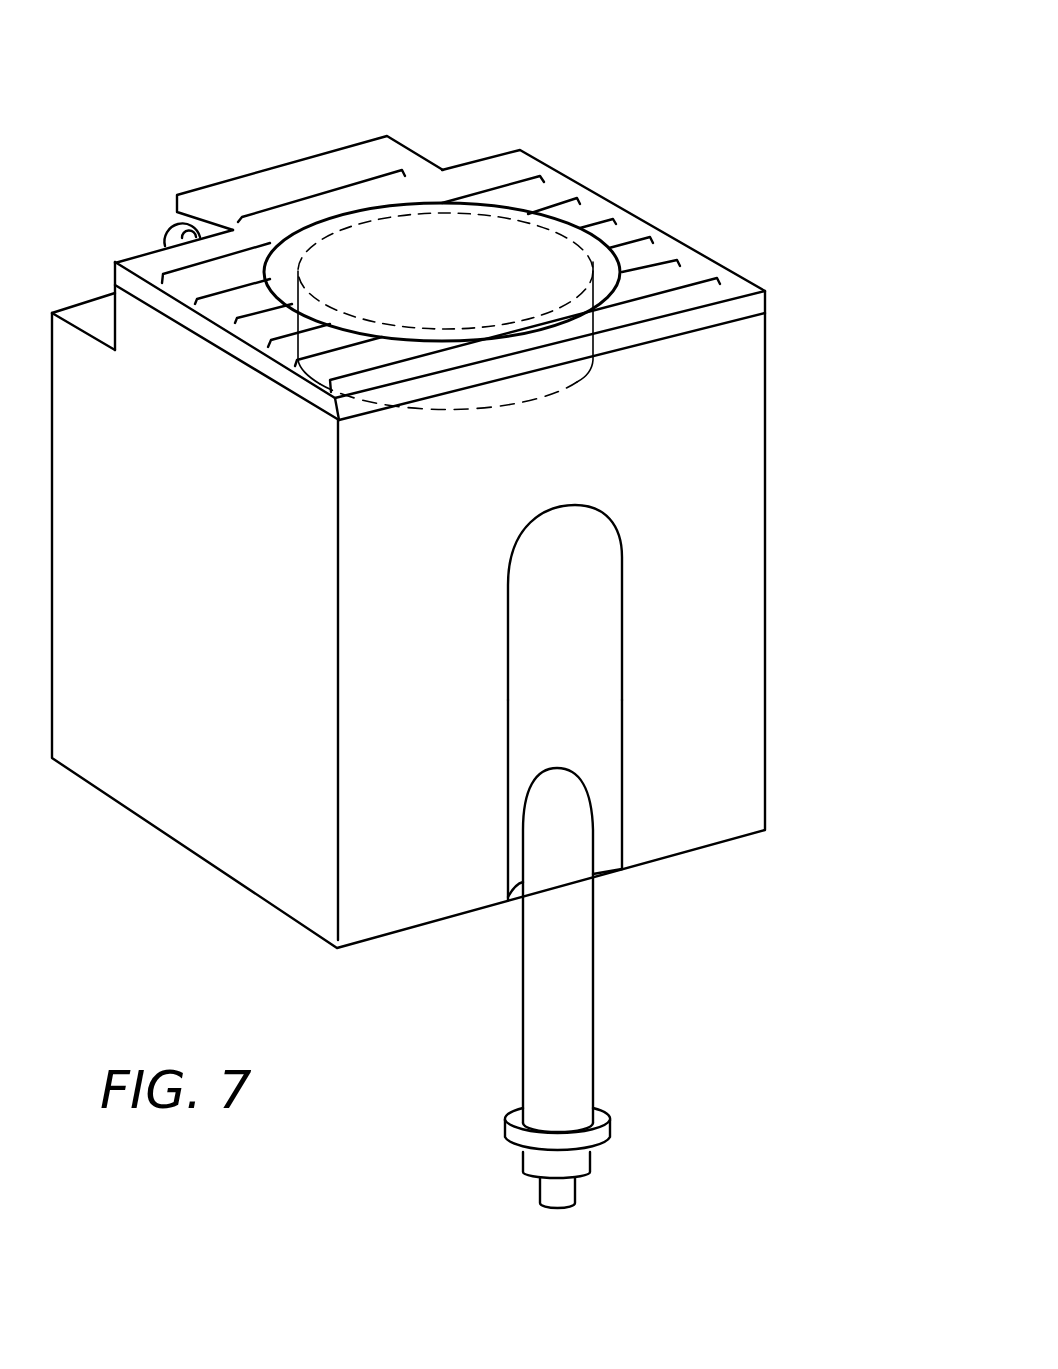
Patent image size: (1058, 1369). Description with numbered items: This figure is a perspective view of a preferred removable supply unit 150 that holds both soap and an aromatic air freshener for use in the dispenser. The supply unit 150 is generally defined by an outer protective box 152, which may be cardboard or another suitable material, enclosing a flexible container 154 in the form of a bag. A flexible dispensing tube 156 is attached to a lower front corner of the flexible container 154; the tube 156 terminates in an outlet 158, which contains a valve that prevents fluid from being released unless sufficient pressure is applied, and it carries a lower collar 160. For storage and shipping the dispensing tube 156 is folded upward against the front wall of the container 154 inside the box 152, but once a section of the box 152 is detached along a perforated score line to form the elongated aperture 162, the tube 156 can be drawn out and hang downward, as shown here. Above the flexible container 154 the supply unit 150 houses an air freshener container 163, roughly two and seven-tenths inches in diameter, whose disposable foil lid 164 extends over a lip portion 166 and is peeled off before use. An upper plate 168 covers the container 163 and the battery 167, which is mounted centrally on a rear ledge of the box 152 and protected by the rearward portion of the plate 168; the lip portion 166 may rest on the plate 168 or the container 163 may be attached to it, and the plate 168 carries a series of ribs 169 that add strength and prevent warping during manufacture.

The supply unit 150 is at (598, 76).
The outer protective box 152 is at (765, 619).
The flexible container 154 is at (588, 575).
The flexible dispensing tube 156 is at (593, 997).
The outlet 158 is at (558, 1208).
The lower collar 160 is at (612, 1128).
The elongated aperture 162 is at (612, 718).
The air freshener container 163 is at (577, 382).
The lid 164 is at (587, 246).
The lip portion 166 is at (618, 292).
The battery 167 is at (170, 225).
The upper plate 168 is at (411, 147).
The ribs 169 is at (178, 268).